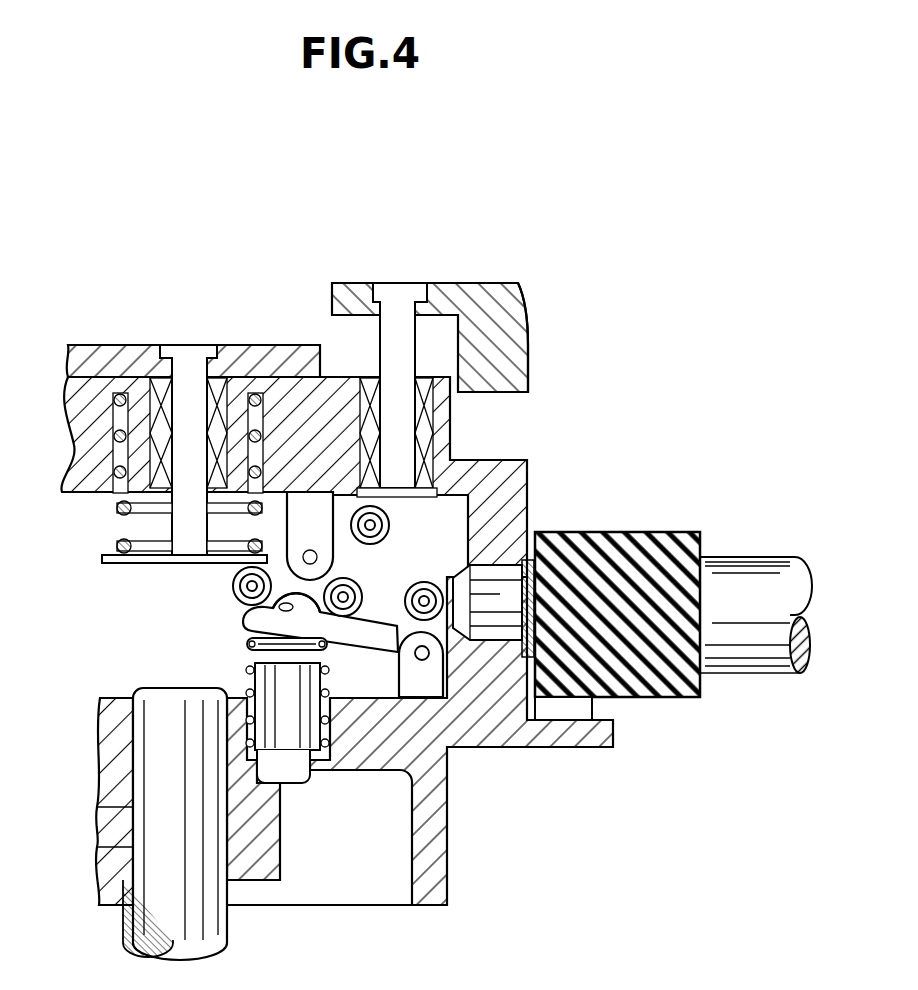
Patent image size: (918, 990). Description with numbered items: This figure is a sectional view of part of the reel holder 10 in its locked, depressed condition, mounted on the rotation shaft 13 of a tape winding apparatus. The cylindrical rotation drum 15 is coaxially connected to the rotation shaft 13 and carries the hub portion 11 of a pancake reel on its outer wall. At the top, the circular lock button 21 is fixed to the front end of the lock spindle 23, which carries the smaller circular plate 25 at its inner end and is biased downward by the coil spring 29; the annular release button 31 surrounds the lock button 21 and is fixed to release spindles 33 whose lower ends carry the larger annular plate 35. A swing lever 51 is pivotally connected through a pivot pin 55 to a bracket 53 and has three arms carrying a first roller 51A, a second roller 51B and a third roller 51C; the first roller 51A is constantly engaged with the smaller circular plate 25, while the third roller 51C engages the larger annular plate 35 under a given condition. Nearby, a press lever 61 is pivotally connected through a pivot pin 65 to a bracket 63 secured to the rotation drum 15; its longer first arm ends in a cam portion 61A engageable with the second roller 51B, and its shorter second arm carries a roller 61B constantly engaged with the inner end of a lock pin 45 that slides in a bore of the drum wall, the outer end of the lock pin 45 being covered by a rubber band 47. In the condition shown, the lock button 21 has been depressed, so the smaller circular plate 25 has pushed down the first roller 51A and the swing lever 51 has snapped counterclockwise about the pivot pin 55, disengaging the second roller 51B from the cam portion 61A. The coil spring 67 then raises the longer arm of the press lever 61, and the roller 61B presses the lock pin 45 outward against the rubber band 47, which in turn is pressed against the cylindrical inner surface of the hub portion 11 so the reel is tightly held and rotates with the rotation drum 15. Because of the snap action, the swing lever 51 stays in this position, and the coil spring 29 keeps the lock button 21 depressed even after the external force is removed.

The reel holder 10 is at (580, 292).
The hub portion 11 is at (653, 540).
The rotation shaft 13 is at (222, 937).
The rotation drum 15 is at (448, 871).
The lock button 21 is at (255, 345).
The lock spindle 23 is at (178, 528).
The smaller circular plate 25 is at (118, 564).
The coil spring 29 is at (118, 508).
The release button 31 is at (499, 290).
The release spindle 33 is at (400, 283).
The larger annular plate 35 is at (467, 460).
The lock pin 45 is at (498, 632).
The rubber band 47 is at (547, 640).
The swing lever 51 is at (248, 630).
The first roller 51A is at (236, 590).
The second roller 51B is at (346, 578).
The third roller 51C is at (388, 530).
The bracket 53 is at (233, 560).
The pivot pin 55 is at (310, 548).
The press lever 61 is at (366, 648).
The cam portion 61A is at (240, 616).
The roller 61B is at (446, 588).
The bracket 63 is at (416, 682).
The pivot pin 65 is at (428, 660).
The coil spring 67 is at (332, 745).